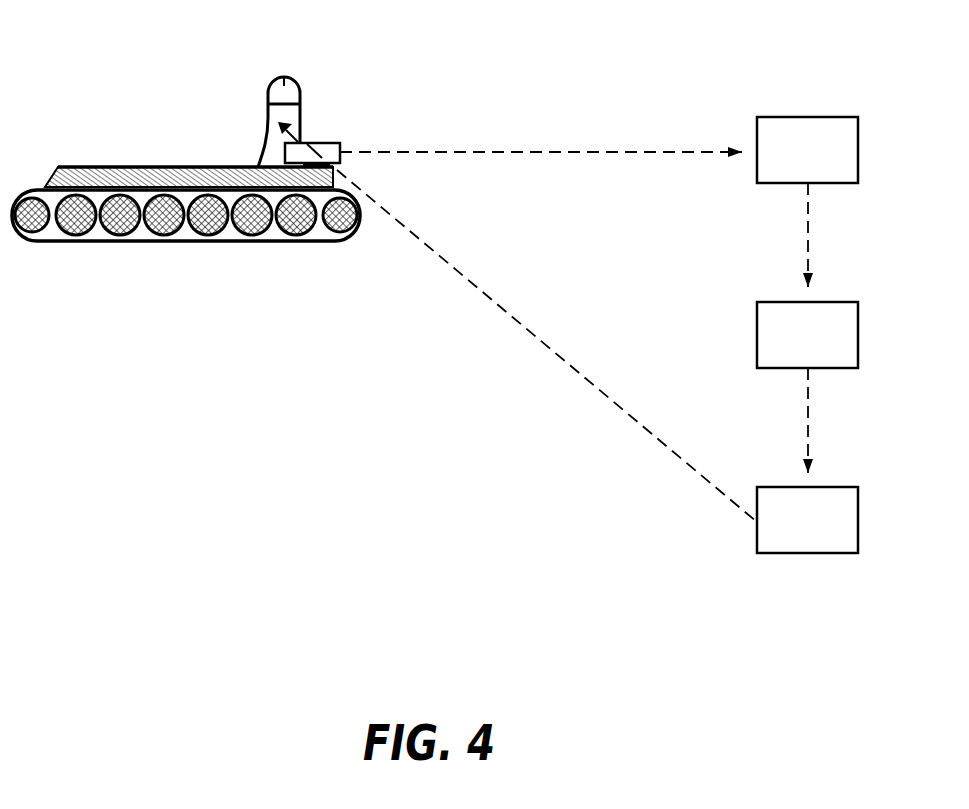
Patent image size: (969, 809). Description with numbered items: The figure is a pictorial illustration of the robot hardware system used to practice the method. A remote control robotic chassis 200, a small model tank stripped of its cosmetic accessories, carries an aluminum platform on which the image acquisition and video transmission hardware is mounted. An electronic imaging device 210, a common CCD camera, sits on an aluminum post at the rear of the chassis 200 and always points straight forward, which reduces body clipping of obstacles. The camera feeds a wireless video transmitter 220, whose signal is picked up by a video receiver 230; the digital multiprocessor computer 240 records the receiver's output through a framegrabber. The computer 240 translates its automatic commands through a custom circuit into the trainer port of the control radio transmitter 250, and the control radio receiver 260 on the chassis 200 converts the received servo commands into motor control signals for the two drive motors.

The remote control robotic chassis 200 is at (148, 243).
The electronic imaging device 210 is at (283, 86).
The video transmitter 220 is at (313, 143).
The video receiver 230 is at (785, 168).
The digital multiprocessor computer 240 is at (785, 353).
The control radio transmitter 250 is at (785, 538).
The control radio receiver 260 is at (270, 137).